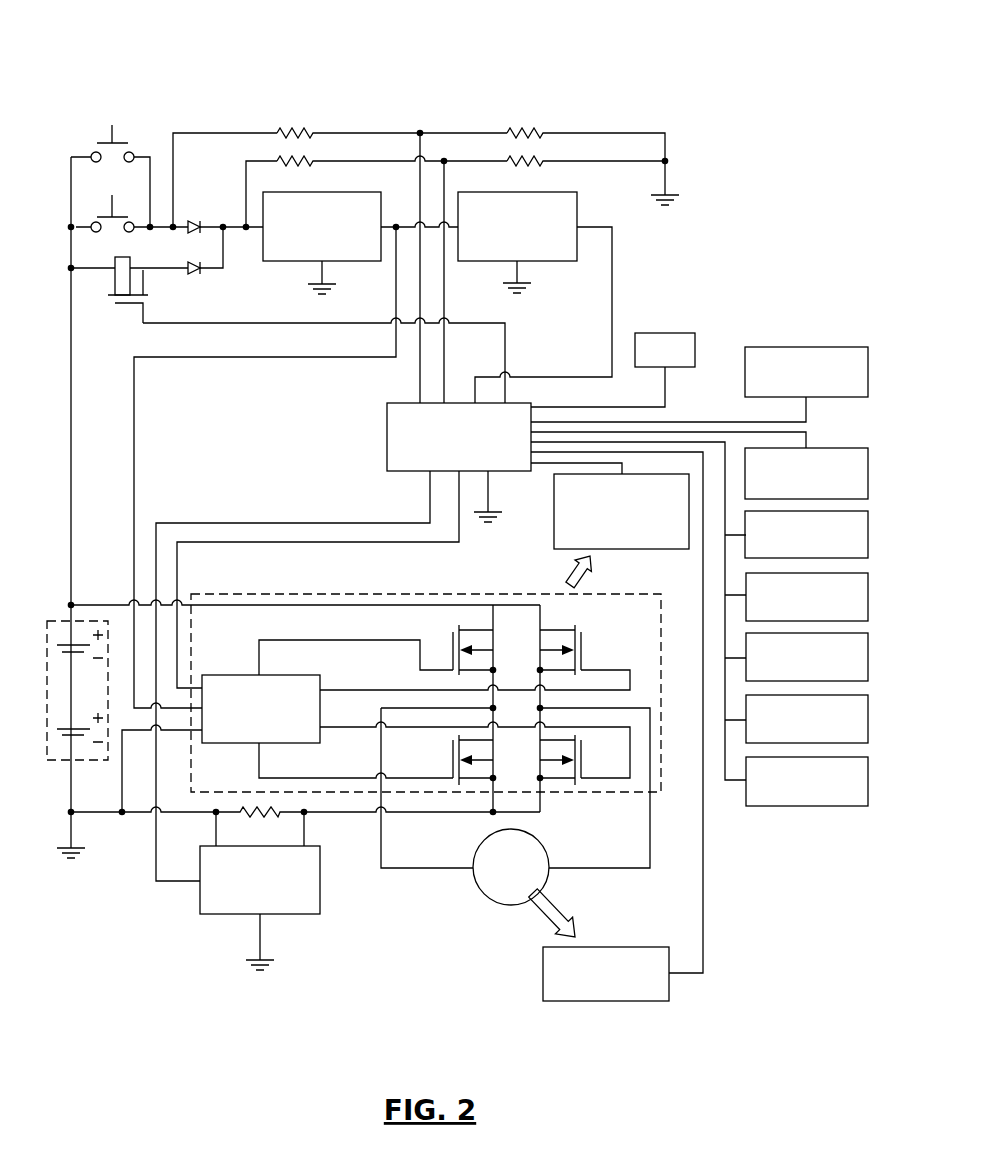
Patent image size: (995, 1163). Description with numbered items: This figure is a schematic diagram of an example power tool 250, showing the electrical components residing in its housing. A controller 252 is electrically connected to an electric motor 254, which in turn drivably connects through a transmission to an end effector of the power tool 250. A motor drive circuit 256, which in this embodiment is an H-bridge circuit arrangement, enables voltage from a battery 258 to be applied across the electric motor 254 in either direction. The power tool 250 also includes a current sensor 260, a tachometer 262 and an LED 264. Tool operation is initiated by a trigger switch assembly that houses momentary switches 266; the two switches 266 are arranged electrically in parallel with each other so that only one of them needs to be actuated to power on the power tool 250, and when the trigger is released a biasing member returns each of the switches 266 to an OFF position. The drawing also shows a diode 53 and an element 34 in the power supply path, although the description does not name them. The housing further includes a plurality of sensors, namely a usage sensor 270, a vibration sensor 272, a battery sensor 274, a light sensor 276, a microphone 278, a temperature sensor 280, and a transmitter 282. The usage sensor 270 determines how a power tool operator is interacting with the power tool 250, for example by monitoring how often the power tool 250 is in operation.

The power tool 250 is at (121, 78).
The momentary switch 266 is at (93, 152).
The diode 53 is at (177, 240).
The charging coil 34 is at (128, 303).
The battery 258 is at (50, 618).
The motor drive circuit 256 is at (256, 594).
The controller 252 is at (517, 473).
The LED 264 is at (668, 333).
The usage sensor 270 is at (803, 347).
The vibration sensor 272 is at (822, 448).
The battery sensor 274 is at (745, 551).
The light sensor 276 is at (746, 611).
The microphone 278 is at (746, 673).
The temperature sensor 280 is at (746, 736).
The transmitter 282 is at (806, 806).
The current sensor 260 is at (215, 915).
The electric motor 254 is at (490, 900).
The tachometer 262 is at (578, 1001).